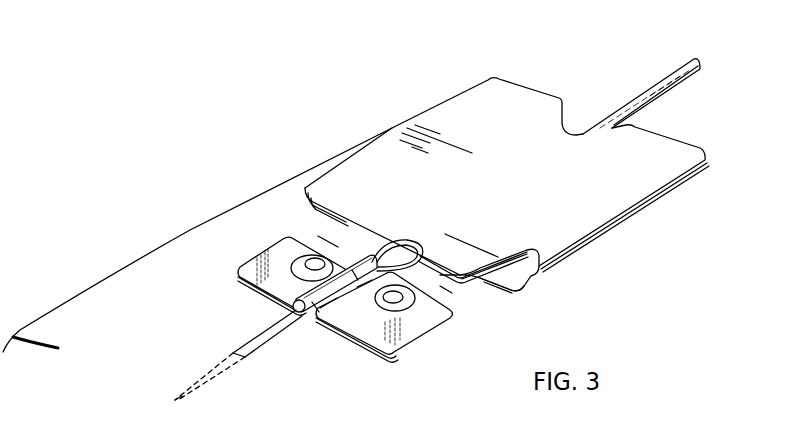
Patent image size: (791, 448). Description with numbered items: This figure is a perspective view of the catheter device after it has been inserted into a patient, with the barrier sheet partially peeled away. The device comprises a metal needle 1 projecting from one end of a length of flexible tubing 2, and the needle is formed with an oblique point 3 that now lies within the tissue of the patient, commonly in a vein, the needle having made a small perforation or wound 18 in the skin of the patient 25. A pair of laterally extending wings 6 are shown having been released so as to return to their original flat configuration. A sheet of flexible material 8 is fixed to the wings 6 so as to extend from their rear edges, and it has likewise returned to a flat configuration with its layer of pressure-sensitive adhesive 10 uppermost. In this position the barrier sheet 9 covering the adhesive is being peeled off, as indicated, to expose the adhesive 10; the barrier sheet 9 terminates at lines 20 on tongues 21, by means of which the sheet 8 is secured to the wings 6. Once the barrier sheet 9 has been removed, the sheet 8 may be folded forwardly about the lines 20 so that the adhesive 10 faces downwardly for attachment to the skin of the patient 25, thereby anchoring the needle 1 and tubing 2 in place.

The needle 1 is at (273, 330).
The flexible tubing 2 is at (663, 87).
The oblique point 3 is at (177, 401).
The wings 6 is at (262, 257).
The sheet of flexible material 8 is at (597, 243).
The barrier sheet 9 is at (528, 268).
The pressure-sensitive adhesive 10 is at (530, 288).
The perforation 18 is at (242, 357).
The lines 20 is at (347, 227).
The tongues 21 is at (327, 243).
The skin of the patient 25 is at (93, 283).